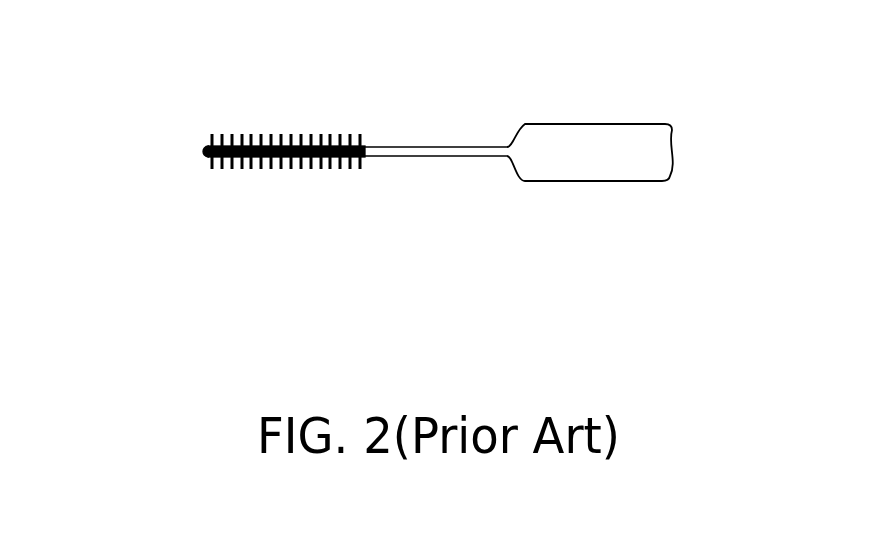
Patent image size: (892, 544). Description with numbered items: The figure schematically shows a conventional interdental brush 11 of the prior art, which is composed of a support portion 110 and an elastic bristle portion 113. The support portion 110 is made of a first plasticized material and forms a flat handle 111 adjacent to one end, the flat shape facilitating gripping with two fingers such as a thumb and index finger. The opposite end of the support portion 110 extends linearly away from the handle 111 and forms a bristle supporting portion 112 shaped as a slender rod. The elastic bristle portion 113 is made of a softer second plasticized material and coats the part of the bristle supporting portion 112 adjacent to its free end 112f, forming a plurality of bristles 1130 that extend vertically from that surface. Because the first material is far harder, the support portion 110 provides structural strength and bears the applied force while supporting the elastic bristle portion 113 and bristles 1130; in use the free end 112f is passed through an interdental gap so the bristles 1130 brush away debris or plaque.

The conventional interdental brush 11 is at (730, 72).
The support portion 110 is at (673, 120).
The handle 111 is at (665, 185).
The bristle supporting portion 112 is at (515, 170).
The free end 112f is at (203, 150).
The elastic bristle portion 113 is at (207, 157).
The bristles 1130 is at (235, 135).